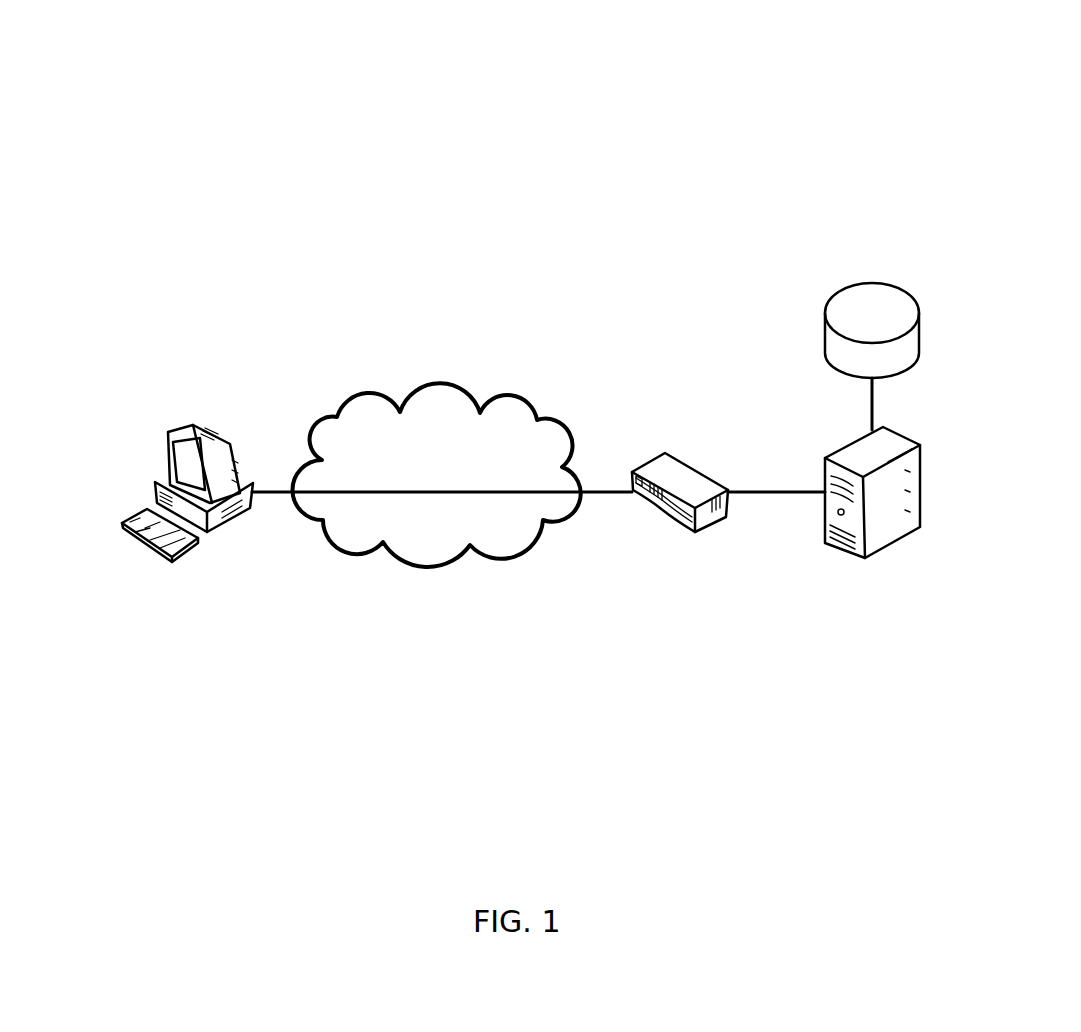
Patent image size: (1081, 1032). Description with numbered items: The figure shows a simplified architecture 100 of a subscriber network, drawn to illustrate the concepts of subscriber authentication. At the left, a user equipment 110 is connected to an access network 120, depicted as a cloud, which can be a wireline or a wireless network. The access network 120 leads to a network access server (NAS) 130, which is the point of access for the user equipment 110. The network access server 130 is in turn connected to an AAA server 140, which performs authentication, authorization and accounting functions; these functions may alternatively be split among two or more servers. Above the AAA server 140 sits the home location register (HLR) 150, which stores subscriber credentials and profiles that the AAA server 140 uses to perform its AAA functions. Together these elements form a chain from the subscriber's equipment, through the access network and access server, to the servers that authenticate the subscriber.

The architecture 100 is at (1067, 67).
The user equipment 110 is at (203, 426).
The access network 120 is at (452, 488).
The network access server (NAS) 130 is at (665, 453).
The AAA server 140 is at (920, 445).
The home location register (HLR) 150 is at (919, 308).